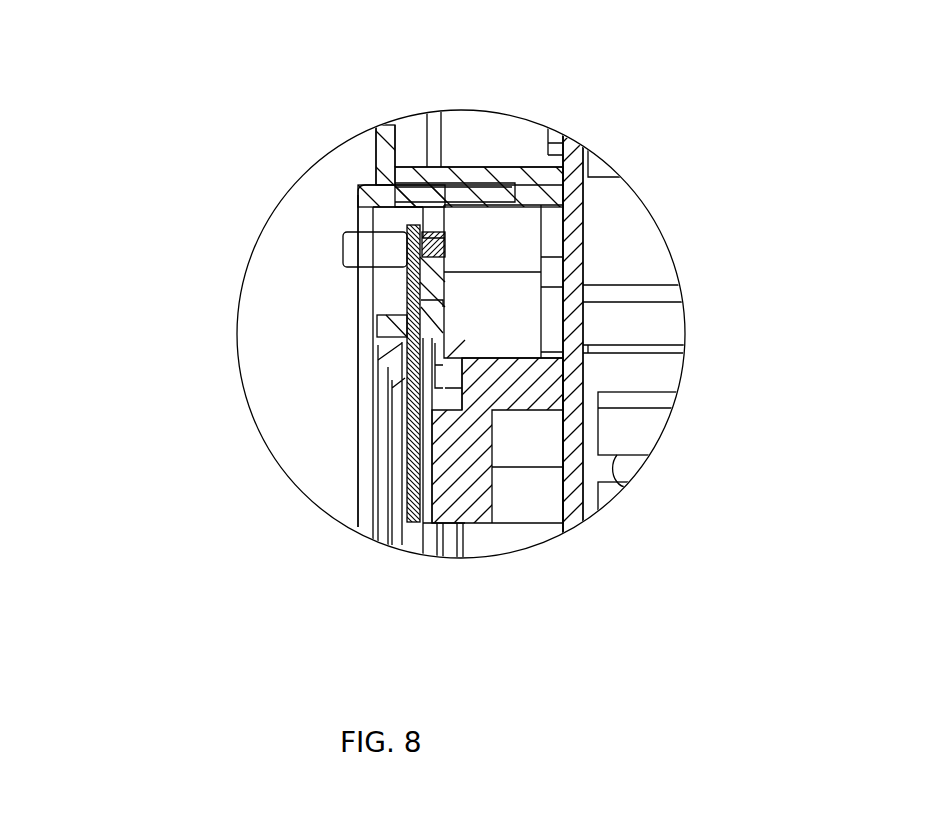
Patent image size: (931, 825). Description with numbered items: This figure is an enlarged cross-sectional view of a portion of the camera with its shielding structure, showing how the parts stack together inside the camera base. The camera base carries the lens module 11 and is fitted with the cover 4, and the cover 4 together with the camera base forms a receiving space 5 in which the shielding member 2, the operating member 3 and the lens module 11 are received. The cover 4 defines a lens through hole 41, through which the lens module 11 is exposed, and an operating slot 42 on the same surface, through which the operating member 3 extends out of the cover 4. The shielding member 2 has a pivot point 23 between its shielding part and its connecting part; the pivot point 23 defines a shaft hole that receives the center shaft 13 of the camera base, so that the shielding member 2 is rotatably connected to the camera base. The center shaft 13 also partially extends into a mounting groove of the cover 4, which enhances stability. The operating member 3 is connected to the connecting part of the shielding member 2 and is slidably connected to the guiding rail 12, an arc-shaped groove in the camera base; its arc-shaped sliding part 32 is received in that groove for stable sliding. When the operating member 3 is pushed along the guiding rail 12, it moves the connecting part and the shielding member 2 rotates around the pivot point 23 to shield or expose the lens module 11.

The shielding member 2 is at (410, 430).
The operating member 3 is at (372, 251).
The cover 4 is at (382, 225).
The receiving space 5 is at (358, 200).
The lens module 11 is at (423, 553).
The guiding rail 12 is at (445, 242).
The center shaft 13 is at (400, 328).
The pivot point 23 is at (423, 313).
The arc-shaped sliding part 32 is at (443, 207).
The lens through hole 41 is at (397, 495).
The operating slot 42 is at (365, 265).